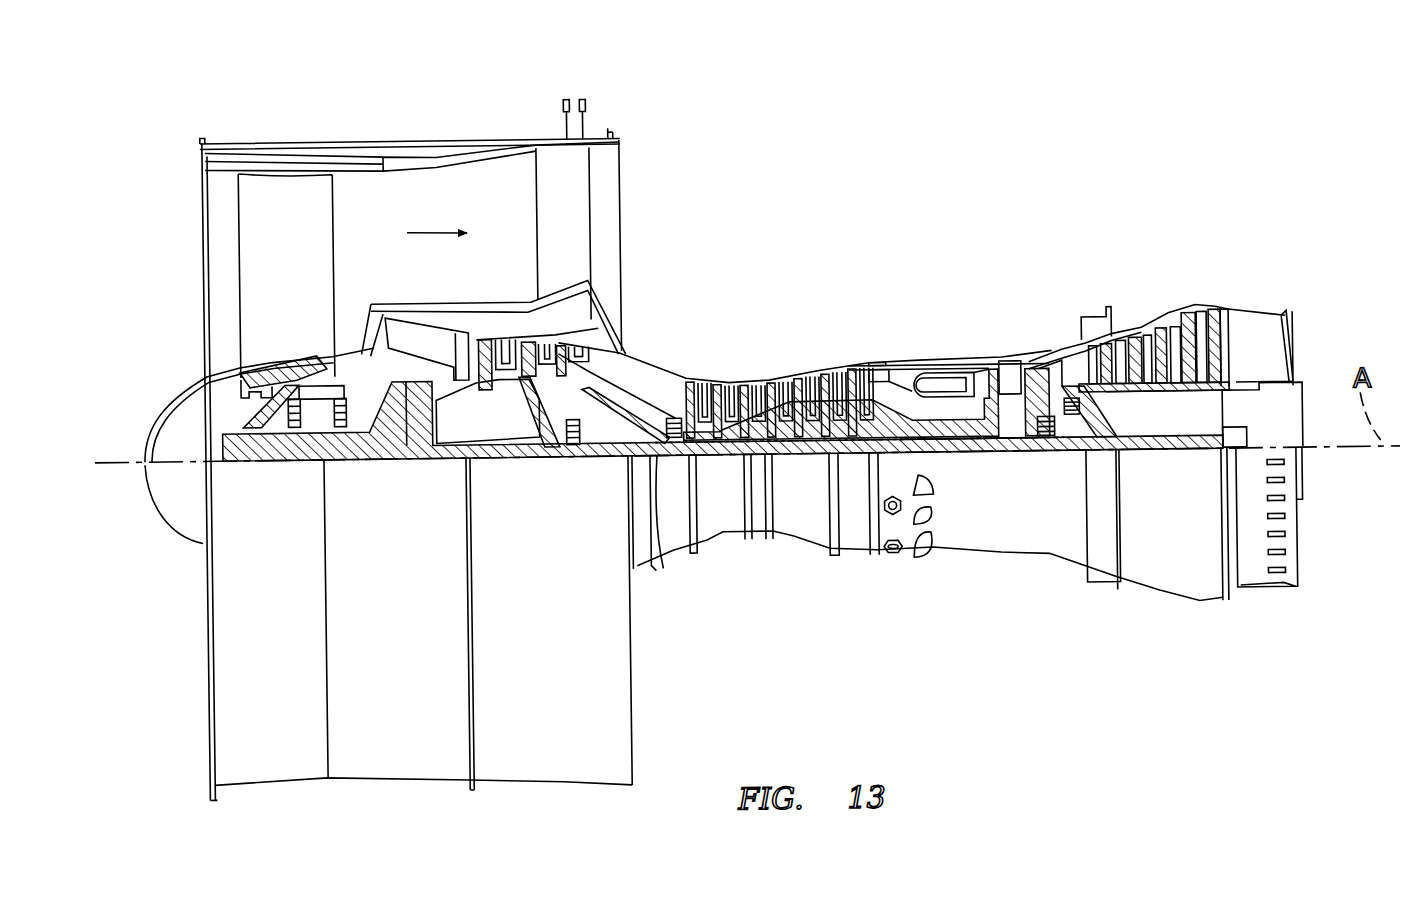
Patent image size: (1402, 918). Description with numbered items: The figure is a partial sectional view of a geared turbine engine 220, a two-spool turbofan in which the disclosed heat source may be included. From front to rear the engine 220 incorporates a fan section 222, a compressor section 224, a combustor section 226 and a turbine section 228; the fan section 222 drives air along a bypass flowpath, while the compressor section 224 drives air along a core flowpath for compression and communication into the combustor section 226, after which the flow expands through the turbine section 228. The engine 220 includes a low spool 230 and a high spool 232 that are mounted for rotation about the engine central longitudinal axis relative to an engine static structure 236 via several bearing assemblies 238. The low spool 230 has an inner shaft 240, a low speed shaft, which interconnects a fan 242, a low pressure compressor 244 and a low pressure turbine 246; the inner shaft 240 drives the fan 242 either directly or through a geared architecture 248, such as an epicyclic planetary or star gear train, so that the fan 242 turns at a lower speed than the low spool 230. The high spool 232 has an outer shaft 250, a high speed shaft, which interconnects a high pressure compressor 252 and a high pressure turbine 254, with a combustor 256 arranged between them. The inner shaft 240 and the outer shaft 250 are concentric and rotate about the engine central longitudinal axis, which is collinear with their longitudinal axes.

The geared turbine engine 220 is at (978, 189).
The fan section 222 is at (316, 128).
The compressor section 224 is at (684, 368).
The combustor section 226 is at (938, 348).
The turbine section 228 is at (1108, 300).
The low spool 230 is at (805, 463).
The high spool 232 is at (853, 412).
The engine static structure 236 is at (854, 557).
The bearing assemblies 238 is at (573, 443).
The inner shaft 240 is at (655, 469).
The fan 242 is at (298, 272).
The low pressure compressor 244 is at (549, 341).
The low pressure turbine 246 is at (1152, 327).
The geared architecture 248 is at (408, 426).
The outer shaft 250 is at (960, 443).
The high pressure compressor 252 is at (781, 381).
The high pressure turbine 254 is at (1022, 349).
The combustor 256 is at (937, 388).